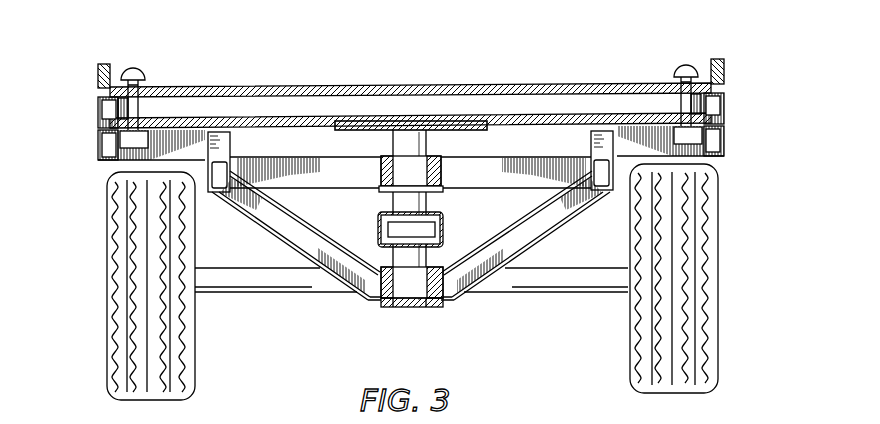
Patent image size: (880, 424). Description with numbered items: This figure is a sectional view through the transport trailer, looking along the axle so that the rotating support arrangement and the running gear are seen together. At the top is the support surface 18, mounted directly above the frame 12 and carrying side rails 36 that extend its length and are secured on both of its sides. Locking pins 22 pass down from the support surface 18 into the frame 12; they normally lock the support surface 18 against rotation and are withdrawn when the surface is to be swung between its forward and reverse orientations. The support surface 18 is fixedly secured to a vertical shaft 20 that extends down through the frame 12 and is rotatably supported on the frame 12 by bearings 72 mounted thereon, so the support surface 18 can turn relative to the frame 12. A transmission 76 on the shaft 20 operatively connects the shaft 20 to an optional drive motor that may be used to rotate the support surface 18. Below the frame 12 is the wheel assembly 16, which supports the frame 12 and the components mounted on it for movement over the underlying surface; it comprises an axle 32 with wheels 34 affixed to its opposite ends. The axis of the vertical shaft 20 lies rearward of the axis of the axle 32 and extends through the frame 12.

The frame 12 is at (98, 141).
The wheel assembly 16 is at (491, 313).
The support surface 18 is at (98, 105).
The vertical shaft 20 is at (393, 203).
The locking pins 22 is at (144, 74).
The axle 32 is at (303, 298).
The wheels 34 is at (107, 288).
The side rails 36 is at (98, 72).
The bearings 72 is at (384, 168).
The transmission 76 is at (416, 226).